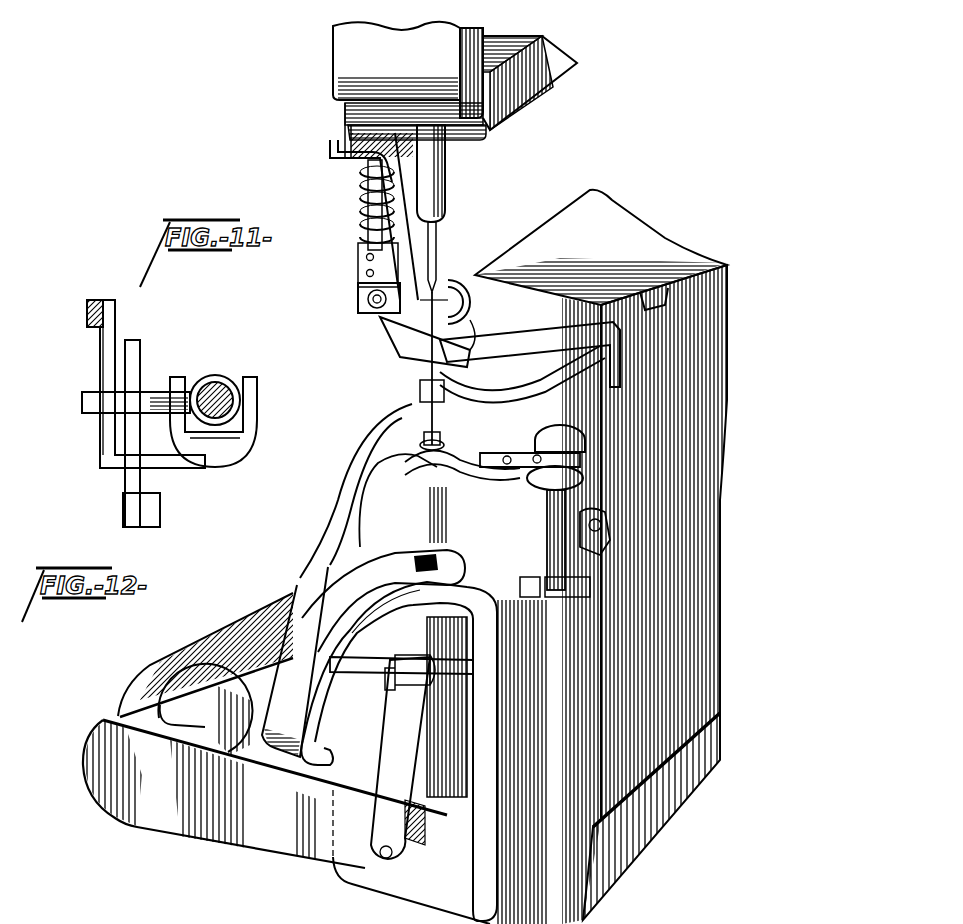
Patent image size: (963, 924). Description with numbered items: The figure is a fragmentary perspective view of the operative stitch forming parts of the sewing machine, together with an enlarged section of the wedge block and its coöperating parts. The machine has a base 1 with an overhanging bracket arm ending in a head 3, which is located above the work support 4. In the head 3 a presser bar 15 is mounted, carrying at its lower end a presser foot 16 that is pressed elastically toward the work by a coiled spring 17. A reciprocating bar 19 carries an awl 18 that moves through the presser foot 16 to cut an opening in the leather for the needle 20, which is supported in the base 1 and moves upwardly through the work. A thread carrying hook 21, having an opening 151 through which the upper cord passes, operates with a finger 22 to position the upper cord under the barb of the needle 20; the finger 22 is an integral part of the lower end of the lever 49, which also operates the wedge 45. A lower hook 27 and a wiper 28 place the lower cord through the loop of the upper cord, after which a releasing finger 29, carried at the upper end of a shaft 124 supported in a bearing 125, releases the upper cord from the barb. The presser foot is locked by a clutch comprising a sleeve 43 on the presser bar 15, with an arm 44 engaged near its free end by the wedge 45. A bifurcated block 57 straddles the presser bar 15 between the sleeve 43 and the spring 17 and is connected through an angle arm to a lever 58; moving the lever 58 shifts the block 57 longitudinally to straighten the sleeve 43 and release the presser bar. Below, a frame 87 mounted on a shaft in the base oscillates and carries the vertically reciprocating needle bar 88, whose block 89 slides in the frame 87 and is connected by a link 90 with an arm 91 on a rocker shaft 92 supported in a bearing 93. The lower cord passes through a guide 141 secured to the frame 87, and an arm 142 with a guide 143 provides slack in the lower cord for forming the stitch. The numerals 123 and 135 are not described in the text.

In FIG. 11, the base 1 is at (652, 812).
In FIG. 11, the head 3 is at (555, 66).
In FIG. 11, the work support 4 is at (548, 279).
In FIG. 11, the presser bar 15 is at (365, 215).
In FIG. 12, the presser bar 15 is at (214, 384).
In FIG. 11, the presser foot 16 is at (357, 298).
In FIG. 11, the coiled spring 17 is at (365, 183).
In FIG. 11, the awl 18 is at (440, 236).
In FIG. 11, the reciprocating bar 19 is at (445, 162).
In FIG. 11, the needle 20 is at (420, 378).
In FIG. 11, the thread carrying hook 21 is at (470, 301).
In FIG. 11, the finger 22 is at (395, 322).
In FIG. 11, the lower hook 27 is at (470, 373).
In FIG. 11, the wiper 28 is at (420, 398).
In FIG. 11, the releasing finger 29 is at (445, 472).
In FIG. 12, the sleeve 43 is at (230, 382).
In FIG. 12, the arm 44 is at (85, 402).
In FIG. 12, the wedge 45 is at (136, 346).
In FIG. 11, the lever 49 is at (343, 130).
In FIG. 12, the bifurcated block 57 is at (230, 460).
In FIG. 12, the lever 58 is at (88, 318).
In FIG. 11, the frame 87 is at (362, 884).
In FIG. 11, the needle bar 88 is at (395, 440).
In FIG. 11, the block 89 is at (352, 632).
In FIG. 11, the link 90 is at (420, 797).
In FIG. 11, the arm 91 is at (257, 832).
In FIG. 11, the rocker shaft 92 is at (303, 578).
In FIG. 11, the bearing 93 is at (213, 633).
In FIG. 11, the post 123 is at (532, 570).
In FIG. 11, the shaft 124 is at (547, 512).
In FIG. 11, the bearing 125 is at (540, 480).
In FIG. 11, the bar 135 is at (550, 362).
In FIG. 11, the guide 141 is at (362, 462).
In FIG. 11, the arm 142 is at (296, 655).
In FIG. 11, the guide 143 is at (420, 556).
In FIG. 11, the opening 151 is at (470, 328).